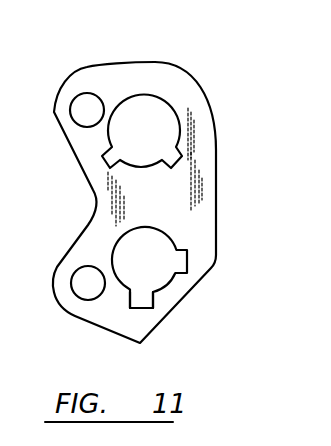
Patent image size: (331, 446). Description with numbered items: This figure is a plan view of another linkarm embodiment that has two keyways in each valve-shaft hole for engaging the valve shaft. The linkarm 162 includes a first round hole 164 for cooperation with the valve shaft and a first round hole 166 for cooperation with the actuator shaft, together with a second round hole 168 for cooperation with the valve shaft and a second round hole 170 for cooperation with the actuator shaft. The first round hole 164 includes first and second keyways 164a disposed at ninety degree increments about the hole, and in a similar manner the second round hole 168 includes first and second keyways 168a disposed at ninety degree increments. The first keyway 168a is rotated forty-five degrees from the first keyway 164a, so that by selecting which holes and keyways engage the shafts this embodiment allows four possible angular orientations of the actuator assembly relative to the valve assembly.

The linkarm 162 is at (148, 60).
The first round hole 164 is at (167, 102).
The first and second keyways 164a is at (188, 140).
The first round hole 166 is at (76, 295).
The second round hole 168 is at (111, 256).
The first and second keyways 168a is at (143, 312).
The second round hole 170 is at (87, 92).